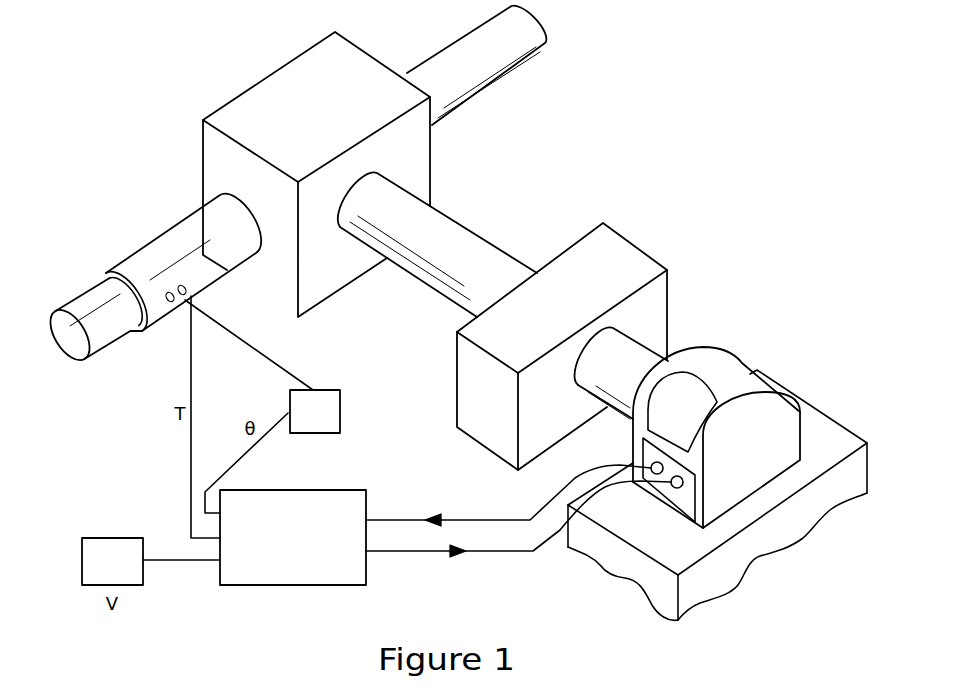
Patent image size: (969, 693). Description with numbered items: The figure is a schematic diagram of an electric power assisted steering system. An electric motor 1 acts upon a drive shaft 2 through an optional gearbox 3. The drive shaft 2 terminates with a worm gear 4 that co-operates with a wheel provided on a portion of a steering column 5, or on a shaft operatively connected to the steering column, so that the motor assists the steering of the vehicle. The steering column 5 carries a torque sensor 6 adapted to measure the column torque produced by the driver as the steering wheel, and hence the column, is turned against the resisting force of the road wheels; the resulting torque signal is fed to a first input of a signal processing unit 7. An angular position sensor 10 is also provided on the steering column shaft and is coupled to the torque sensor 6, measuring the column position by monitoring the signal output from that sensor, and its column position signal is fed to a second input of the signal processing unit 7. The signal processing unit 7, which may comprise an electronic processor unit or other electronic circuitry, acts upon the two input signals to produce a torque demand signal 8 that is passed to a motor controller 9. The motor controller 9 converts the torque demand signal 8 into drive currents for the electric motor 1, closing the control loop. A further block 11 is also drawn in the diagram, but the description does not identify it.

The electric motor 1 is at (792, 430).
The drive shaft 2 is at (462, 248).
The gearbox 3 is at (554, 309).
The worm gear 4 is at (310, 117).
The steering column 5 is at (527, 101).
The torque sensor 6 is at (148, 256).
The signal processing unit 7 is at (285, 549).
The torque demand signal 8 is at (498, 553).
The motor controller 9 is at (688, 503).
The angular position sensor 10 is at (323, 402).
The voltage supply 11 is at (108, 548).